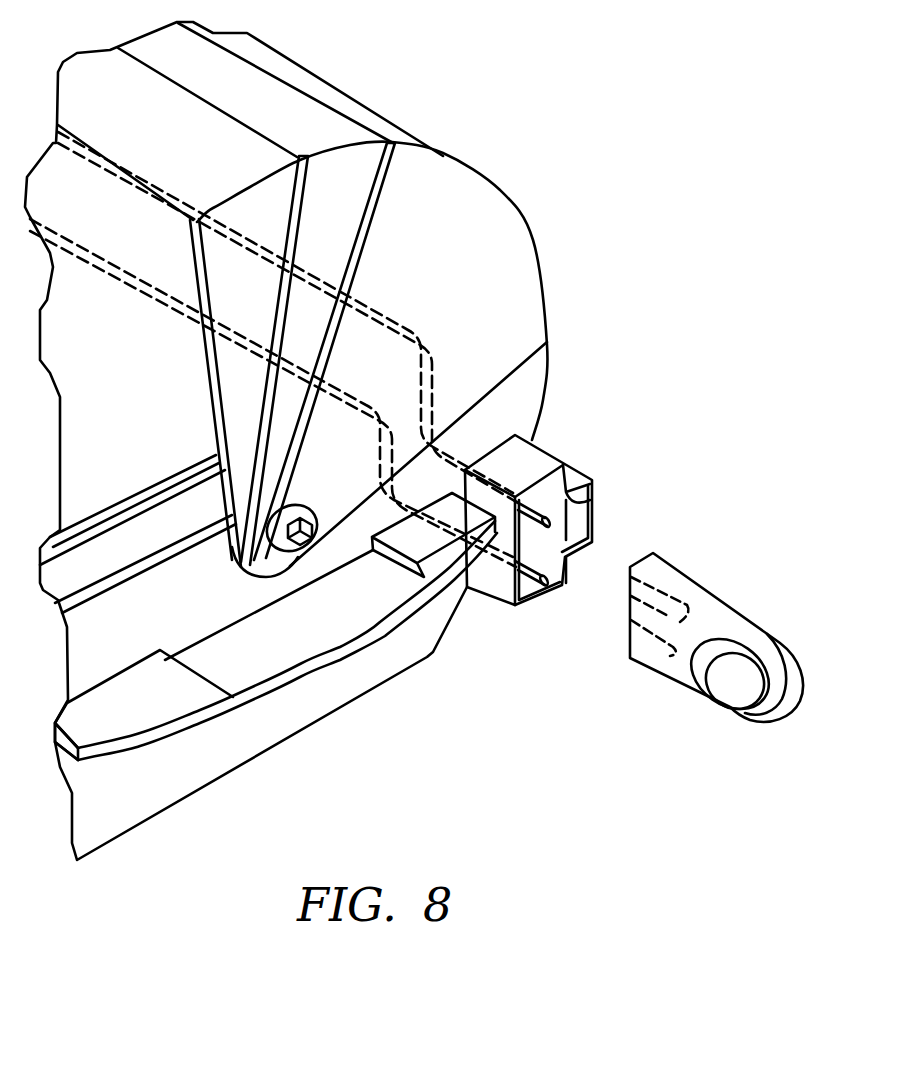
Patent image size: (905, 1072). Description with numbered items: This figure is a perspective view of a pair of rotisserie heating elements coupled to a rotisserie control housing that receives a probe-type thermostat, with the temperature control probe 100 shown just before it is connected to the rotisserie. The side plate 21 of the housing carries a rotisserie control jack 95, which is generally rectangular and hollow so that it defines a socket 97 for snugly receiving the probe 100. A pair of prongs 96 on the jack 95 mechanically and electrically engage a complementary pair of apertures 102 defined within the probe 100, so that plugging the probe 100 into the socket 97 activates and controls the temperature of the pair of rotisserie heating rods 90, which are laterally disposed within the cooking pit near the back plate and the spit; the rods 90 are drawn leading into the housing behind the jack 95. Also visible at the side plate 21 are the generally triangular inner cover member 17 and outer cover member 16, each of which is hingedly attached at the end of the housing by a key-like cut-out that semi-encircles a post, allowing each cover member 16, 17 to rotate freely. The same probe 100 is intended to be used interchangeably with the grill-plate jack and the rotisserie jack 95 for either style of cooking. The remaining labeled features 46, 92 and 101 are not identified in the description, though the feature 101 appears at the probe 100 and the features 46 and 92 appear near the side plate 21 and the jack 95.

The outer cover member 16 is at (352, 185).
The inner cover member 17 is at (443, 183).
The side plate 21 is at (428, 649).
The bar tip 46 is at (96, 728).
The rotisserie heating rods 90 is at (347, 387).
The block body 92 is at (488, 587).
The rotisserie control jack 95 is at (543, 462).
The prongs 96 is at (548, 515).
The socket 97 is at (563, 536).
The temperature control probe 100 is at (707, 592).
The hole 101 is at (728, 678).
The apertures 102 is at (675, 607).